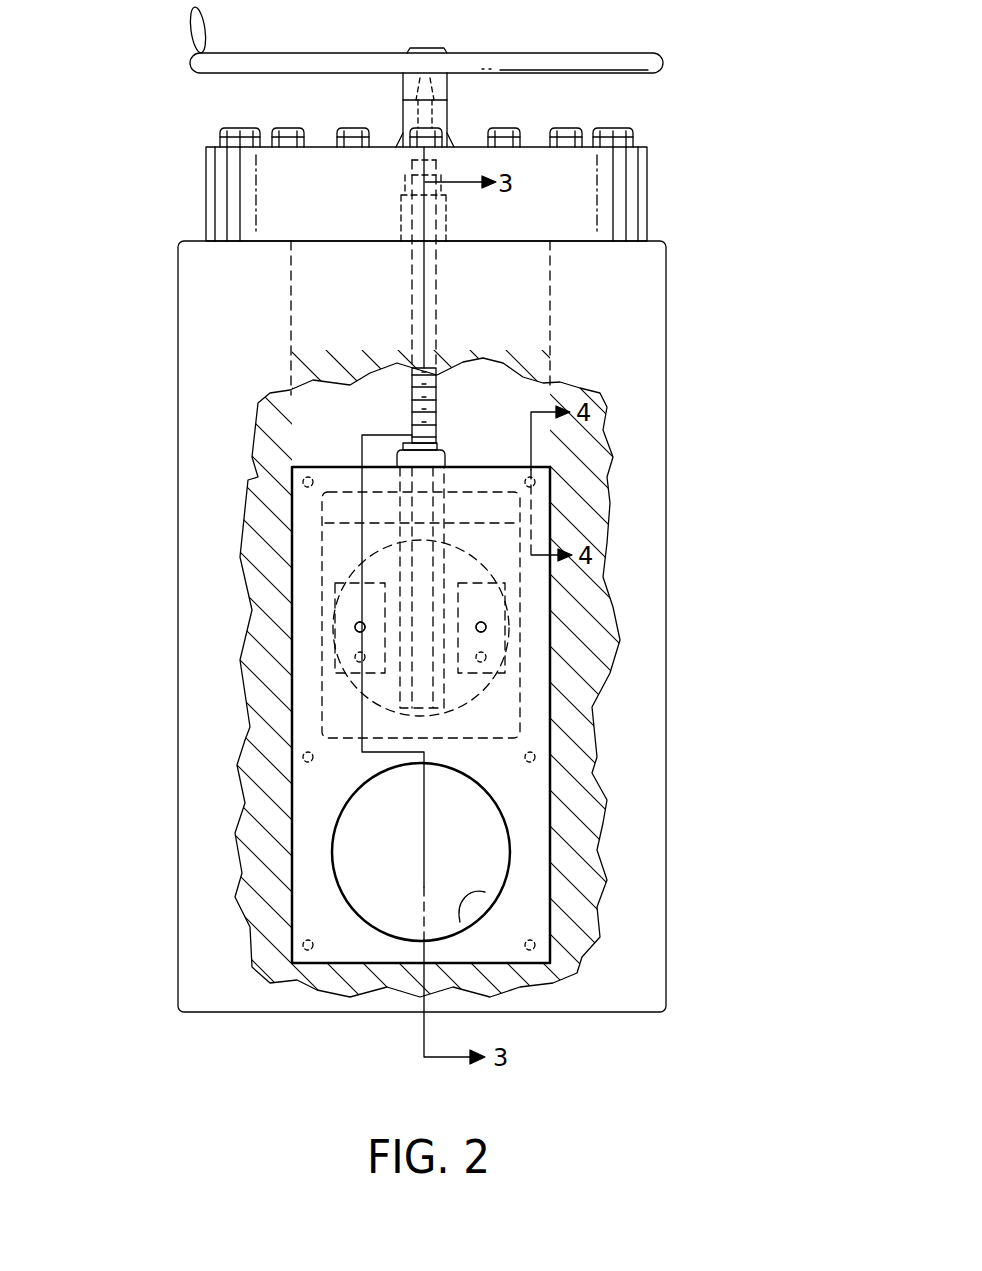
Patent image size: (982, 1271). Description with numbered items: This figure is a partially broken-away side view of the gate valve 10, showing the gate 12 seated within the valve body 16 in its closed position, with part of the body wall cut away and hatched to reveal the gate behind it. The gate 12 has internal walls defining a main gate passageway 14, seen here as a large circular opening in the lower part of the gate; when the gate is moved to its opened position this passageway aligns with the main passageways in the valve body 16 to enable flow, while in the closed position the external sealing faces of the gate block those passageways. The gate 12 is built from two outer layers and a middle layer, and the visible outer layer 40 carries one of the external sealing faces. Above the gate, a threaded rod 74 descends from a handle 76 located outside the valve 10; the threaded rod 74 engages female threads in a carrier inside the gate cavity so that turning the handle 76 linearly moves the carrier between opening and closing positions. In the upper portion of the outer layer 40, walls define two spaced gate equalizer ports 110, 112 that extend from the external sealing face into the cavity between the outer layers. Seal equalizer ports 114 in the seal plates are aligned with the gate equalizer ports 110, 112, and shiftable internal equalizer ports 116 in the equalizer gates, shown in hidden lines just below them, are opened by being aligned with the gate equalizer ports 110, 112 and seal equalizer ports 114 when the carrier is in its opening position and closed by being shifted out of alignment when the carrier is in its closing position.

The gate valve 10 is at (643, 292).
The gate 12 is at (528, 822).
The main gate passageway 14 is at (485, 892).
The valve body 16 is at (643, 457).
The outer layer 40 is at (312, 887).
The threaded rod 74 is at (412, 426).
The handle 76 is at (603, 67).
The gate equalizer port 110 is at (486, 625).
The gate equalizer port 112 is at (355, 627).
The seal equalizer port 114 is at (355, 631).
The internal equalizer port 116 is at (357, 659).